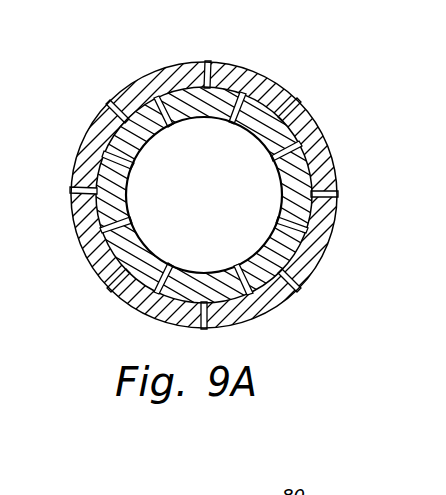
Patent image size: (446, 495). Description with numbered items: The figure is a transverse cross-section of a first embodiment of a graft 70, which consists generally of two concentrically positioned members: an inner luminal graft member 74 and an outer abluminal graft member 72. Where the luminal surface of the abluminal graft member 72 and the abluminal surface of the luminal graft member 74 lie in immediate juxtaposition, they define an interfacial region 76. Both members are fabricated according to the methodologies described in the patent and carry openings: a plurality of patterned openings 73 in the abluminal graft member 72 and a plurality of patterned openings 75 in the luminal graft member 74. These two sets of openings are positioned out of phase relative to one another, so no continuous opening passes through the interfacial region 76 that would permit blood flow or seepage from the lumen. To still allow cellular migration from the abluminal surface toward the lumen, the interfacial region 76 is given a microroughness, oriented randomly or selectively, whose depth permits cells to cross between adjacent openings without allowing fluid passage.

The graft 70 is at (205, 193).
The abluminal graft member 72 is at (330, 145).
The patterned openings 73 is at (338, 171).
The luminal graft member 74 is at (273, 262).
The patterned openings 75 is at (78, 176).
The interfacial region 76 is at (246, 318).